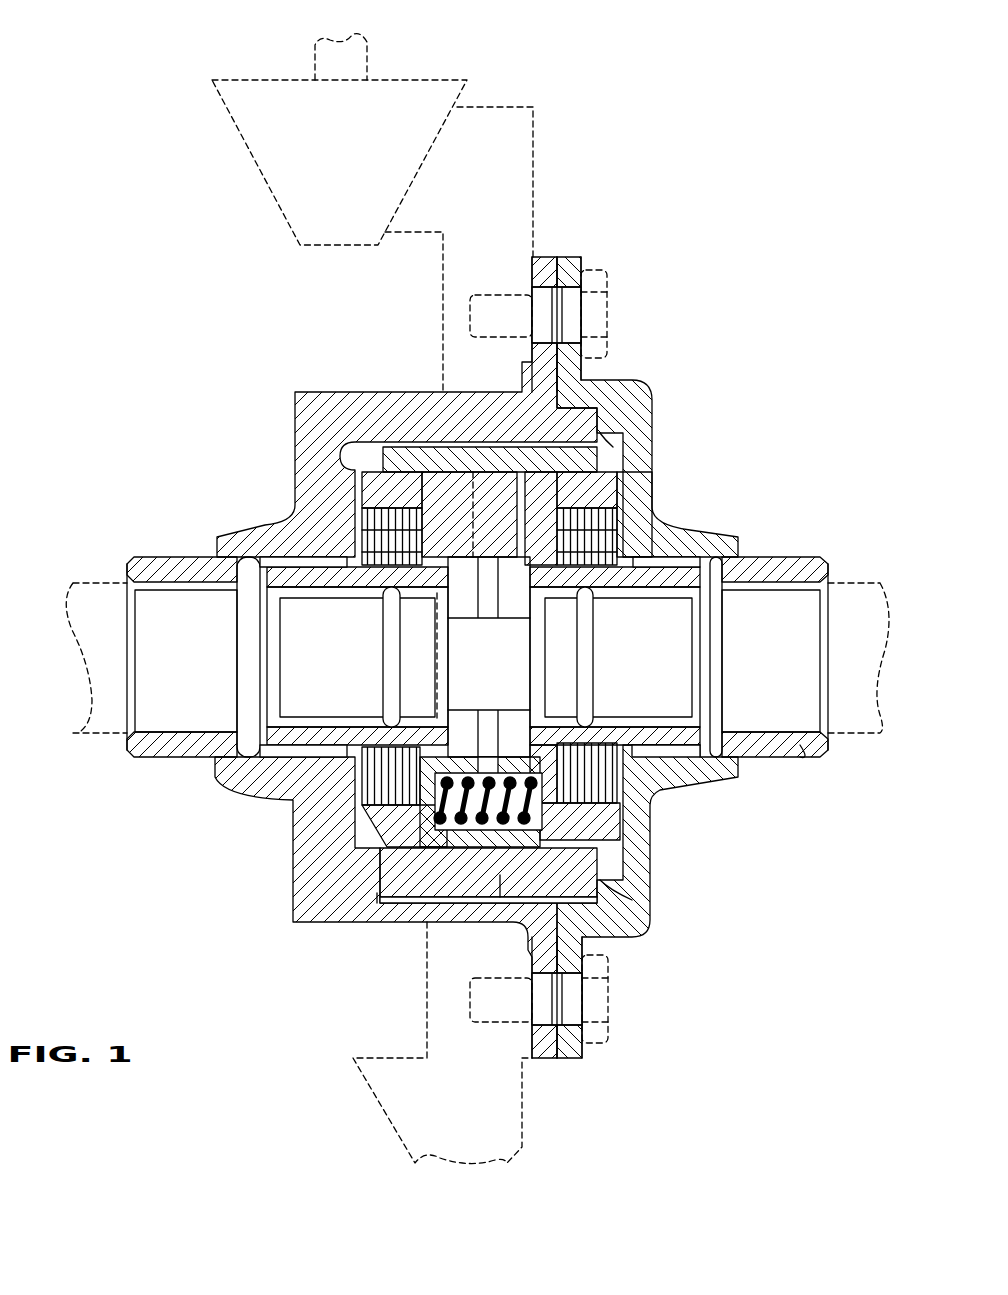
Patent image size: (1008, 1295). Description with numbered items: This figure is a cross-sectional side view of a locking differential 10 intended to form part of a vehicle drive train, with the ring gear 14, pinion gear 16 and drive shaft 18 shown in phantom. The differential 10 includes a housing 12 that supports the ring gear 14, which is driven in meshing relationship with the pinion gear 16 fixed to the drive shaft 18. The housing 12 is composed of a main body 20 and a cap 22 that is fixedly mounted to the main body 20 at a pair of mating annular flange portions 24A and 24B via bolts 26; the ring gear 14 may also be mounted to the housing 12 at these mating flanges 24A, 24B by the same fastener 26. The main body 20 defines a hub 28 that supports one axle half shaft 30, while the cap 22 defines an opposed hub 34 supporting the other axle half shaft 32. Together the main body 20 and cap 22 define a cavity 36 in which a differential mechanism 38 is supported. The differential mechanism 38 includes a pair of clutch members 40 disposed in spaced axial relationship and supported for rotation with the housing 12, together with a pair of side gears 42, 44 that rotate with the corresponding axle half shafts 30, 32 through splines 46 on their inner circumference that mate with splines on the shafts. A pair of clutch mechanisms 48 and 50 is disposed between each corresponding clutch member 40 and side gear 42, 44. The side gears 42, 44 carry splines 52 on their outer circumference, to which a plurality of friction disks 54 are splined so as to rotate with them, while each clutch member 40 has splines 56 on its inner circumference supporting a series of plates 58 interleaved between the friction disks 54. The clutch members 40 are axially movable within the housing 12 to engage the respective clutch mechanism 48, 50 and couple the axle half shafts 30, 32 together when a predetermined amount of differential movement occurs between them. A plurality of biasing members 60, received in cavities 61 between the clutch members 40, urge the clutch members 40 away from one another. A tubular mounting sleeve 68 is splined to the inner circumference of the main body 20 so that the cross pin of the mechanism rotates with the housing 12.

The locking differential 10 is at (703, 283).
The housing 12 is at (320, 385).
The ring gear 14 is at (533, 150).
The pinion gear 16 is at (258, 160).
The drive shaft 18 is at (375, 60).
The main body 20 is at (293, 418).
The cap 22 is at (652, 412).
The annular flange portion 24A is at (532, 270).
The annular flange portion 24B is at (581, 275).
The bolts 26 is at (605, 305).
The hub 28 is at (178, 555).
The axle half shaft 30 is at (105, 740).
The axle half shaft 32 is at (838, 580).
The hub 34 is at (800, 757).
The cavity 36 is at (378, 828).
The differential mechanism 38 is at (665, 503).
The clutch members 40 is at (412, 505).
The side gear 42 is at (290, 570).
The side gear 44 is at (708, 577).
The splines 46 is at (293, 722).
The clutch mechanism 48 is at (358, 773).
The clutch mechanism 50 is at (630, 777).
The splines 52 is at (410, 747).
The friction disks 54 is at (395, 568).
The splines 56 is at (650, 843).
The plates 58 is at (425, 500).
The biasing members 60 is at (462, 880).
The cavities 61 is at (377, 893).
The tubular mounting sleeve 68 is at (617, 440).